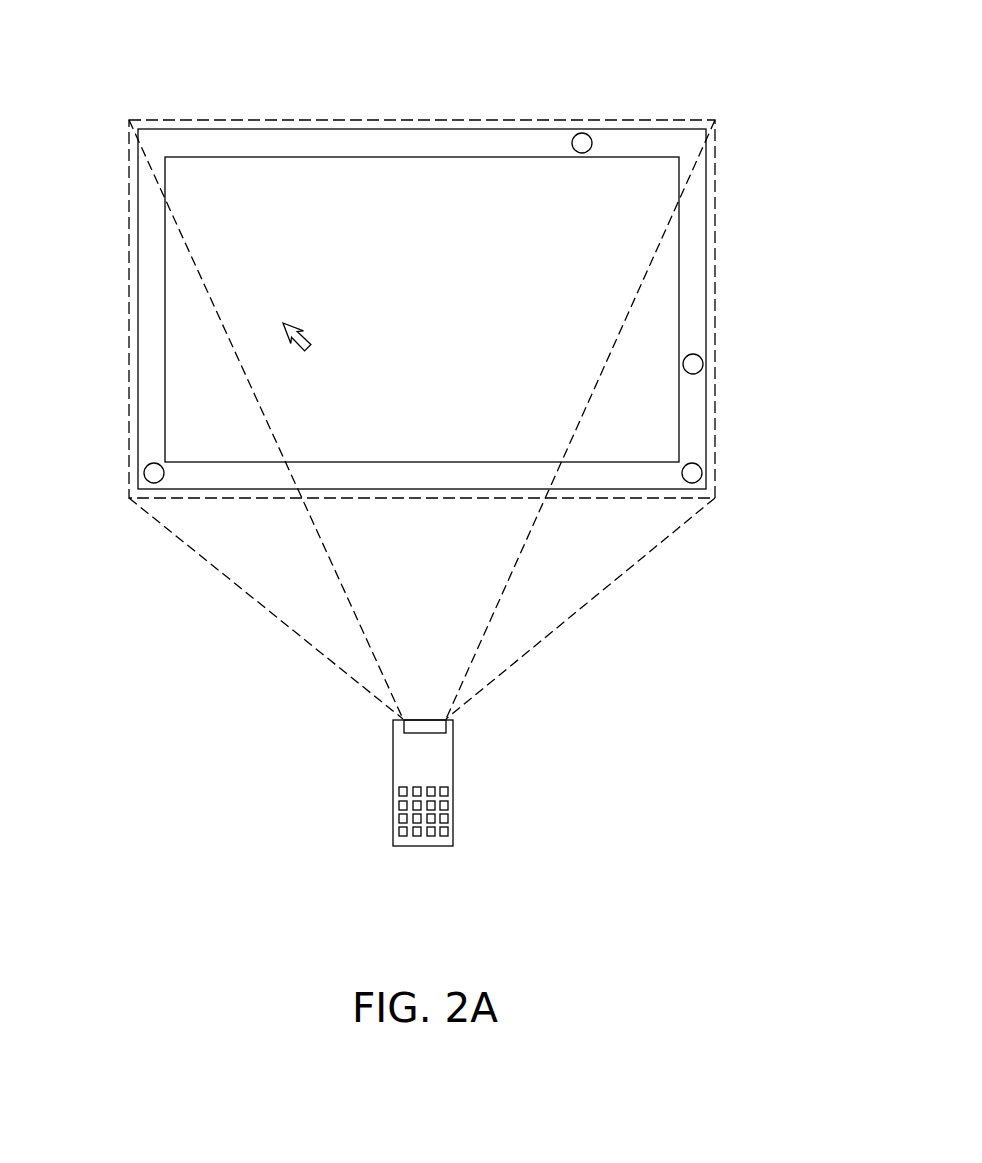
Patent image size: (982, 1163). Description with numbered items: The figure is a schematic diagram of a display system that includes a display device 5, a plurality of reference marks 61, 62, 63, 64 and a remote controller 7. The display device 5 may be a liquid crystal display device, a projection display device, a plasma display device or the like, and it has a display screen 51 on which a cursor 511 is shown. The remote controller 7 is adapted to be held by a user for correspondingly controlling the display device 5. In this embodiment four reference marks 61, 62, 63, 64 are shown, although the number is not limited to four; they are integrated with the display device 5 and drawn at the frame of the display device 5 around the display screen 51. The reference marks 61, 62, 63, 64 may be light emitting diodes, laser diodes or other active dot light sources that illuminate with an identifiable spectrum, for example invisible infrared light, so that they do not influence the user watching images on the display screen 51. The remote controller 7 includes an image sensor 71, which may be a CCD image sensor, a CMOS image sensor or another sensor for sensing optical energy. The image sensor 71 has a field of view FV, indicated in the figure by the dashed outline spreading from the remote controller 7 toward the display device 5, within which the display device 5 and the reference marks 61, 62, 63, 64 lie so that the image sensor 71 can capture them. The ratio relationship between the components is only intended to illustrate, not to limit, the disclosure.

The field of view FV is at (228, 120).
The display device 5 is at (325, 129).
The display screen 51 is at (165, 233).
The cursor 511 is at (285, 326).
The reference mark 61 is at (154, 473).
The reference mark 62 is at (582, 143).
The reference mark 63 is at (692, 473).
The reference mark 64 is at (693, 364).
The remote controller 7 is at (440, 777).
The image sensor 71 is at (404, 732).